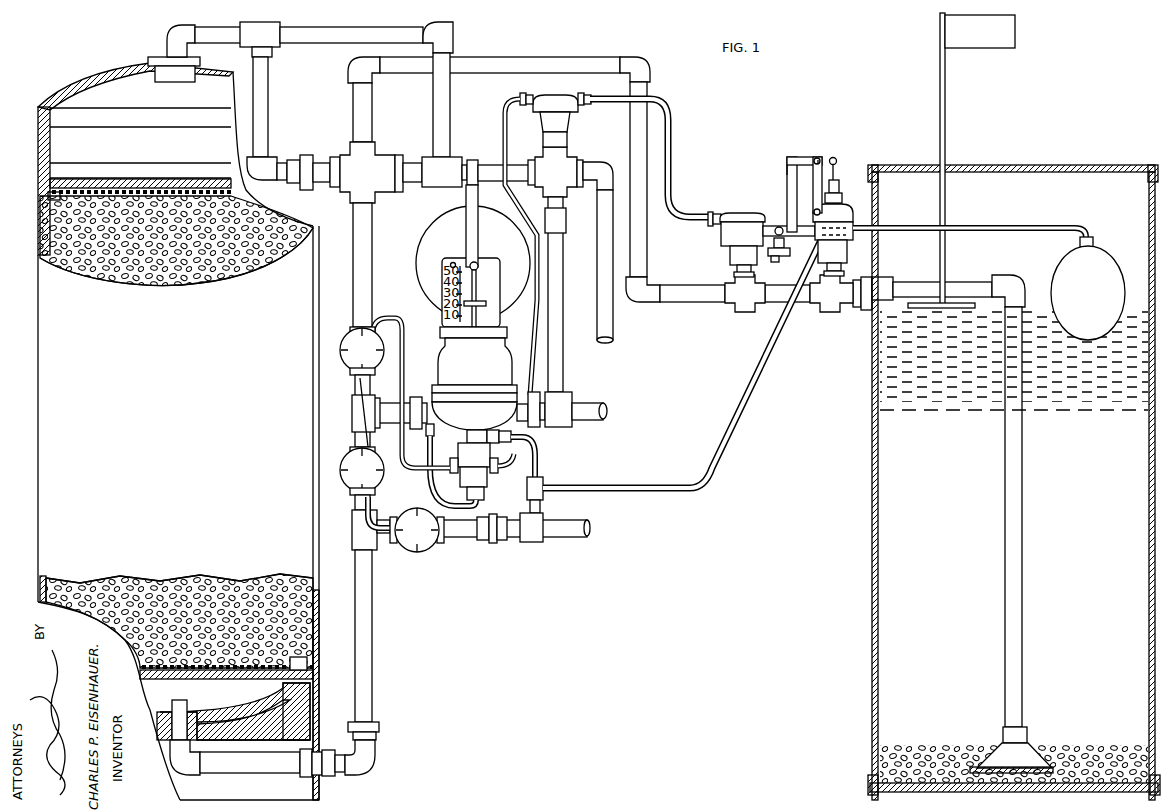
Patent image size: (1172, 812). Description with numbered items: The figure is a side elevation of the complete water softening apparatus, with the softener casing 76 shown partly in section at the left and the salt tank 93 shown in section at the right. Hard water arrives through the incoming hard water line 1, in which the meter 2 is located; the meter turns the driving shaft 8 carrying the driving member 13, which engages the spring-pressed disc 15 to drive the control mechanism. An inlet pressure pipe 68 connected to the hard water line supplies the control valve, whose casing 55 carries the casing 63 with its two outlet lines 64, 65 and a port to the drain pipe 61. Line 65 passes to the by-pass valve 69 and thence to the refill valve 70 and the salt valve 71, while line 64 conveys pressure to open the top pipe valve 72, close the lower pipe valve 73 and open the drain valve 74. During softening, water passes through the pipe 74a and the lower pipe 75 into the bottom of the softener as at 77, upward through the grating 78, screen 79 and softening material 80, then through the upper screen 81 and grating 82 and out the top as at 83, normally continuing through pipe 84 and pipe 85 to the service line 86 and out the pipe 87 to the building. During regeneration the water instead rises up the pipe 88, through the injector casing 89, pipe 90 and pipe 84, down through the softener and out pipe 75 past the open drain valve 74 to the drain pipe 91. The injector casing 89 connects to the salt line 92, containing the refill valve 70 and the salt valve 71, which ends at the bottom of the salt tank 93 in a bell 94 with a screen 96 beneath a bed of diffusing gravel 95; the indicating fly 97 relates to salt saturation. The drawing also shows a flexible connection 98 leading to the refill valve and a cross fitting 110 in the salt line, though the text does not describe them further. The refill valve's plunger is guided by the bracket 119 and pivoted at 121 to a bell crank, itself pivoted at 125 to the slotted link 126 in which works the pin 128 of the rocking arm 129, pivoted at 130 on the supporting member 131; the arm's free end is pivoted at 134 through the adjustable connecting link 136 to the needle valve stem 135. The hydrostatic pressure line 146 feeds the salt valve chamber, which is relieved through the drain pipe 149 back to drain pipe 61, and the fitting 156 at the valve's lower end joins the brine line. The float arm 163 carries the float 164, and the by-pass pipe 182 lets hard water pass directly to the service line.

The incoming hard water line 1 is at (597, 403).
The meter 2 is at (440, 348).
The driving shaft 8 is at (486, 318).
The driving member 13 is at (486, 303).
The spring-pressed disc 15 is at (418, 263).
The valve casing 55 is at (467, 434).
The drain pipe 61 is at (536, 463).
The casing 63 is at (466, 455).
The outlet line 64 is at (402, 382).
The outlet line 65 is at (512, 470).
The inlet pressure pipe 68 is at (436, 496).
The by-pass valve 69 is at (572, 113).
The refill valve 70 is at (721, 236).
The salt valve 71 is at (848, 214).
The top pipe valve 72 is at (343, 340).
The lower pipe valve 73 is at (343, 458).
The drain valve 74 is at (415, 548).
The pipe 74a is at (390, 403).
The lower pipe 75 is at (372, 606).
The softener casing 76 is at (352, 565).
The bottom inlet of softener casing 77 is at (180, 716).
The grating 78 is at (250, 679).
The screen 79 is at (176, 679).
The softening material 80 is at (118, 277).
The upper screen 81 is at (155, 194).
The grating 82 is at (185, 179).
The top outlet of softener 83 is at (185, 72).
The pipe 84 is at (218, 42).
The pipe 85 is at (322, 42).
The service line 86 is at (488, 164).
The outlet pipe 87 is at (598, 247).
The pipe 88 is at (353, 272).
The injector casing 89 is at (342, 190).
The pipe 90 is at (268, 127).
The drain pipe 91 is at (566, 536).
The salt line 92 is at (450, 122).
The salt tank 93 is at (872, 443).
The bell 94 is at (1003, 750).
The diffusing gravel 95 is at (923, 750).
The screen 96 is at (1040, 752).
The indicating fly 97 is at (946, 143).
The flexible hose 98 is at (670, 175).
The cross fitting 110 is at (733, 306).
The bracket 119 is at (778, 269).
The pivot connection 121 is at (781, 257).
The pivot 125 is at (781, 236).
The slotted link 126 is at (786, 170).
The pin 128 is at (789, 155).
The rocking arm 129 is at (810, 156).
The pivot 130 is at (822, 160).
The supporting member 131 is at (820, 156).
The pivot connection 134 is at (838, 160).
The needle valve stem 135 is at (839, 180).
The adjustable connecting link 136 is at (843, 168).
The hydrostatic pressure line 146 is at (786, 222).
The drain pipe 149 is at (768, 345).
The fitting 156 is at (845, 303).
The float arm 163 is at (1056, 226).
The float 164 is at (1060, 260).
The by-pass pipe 182 is at (563, 358).